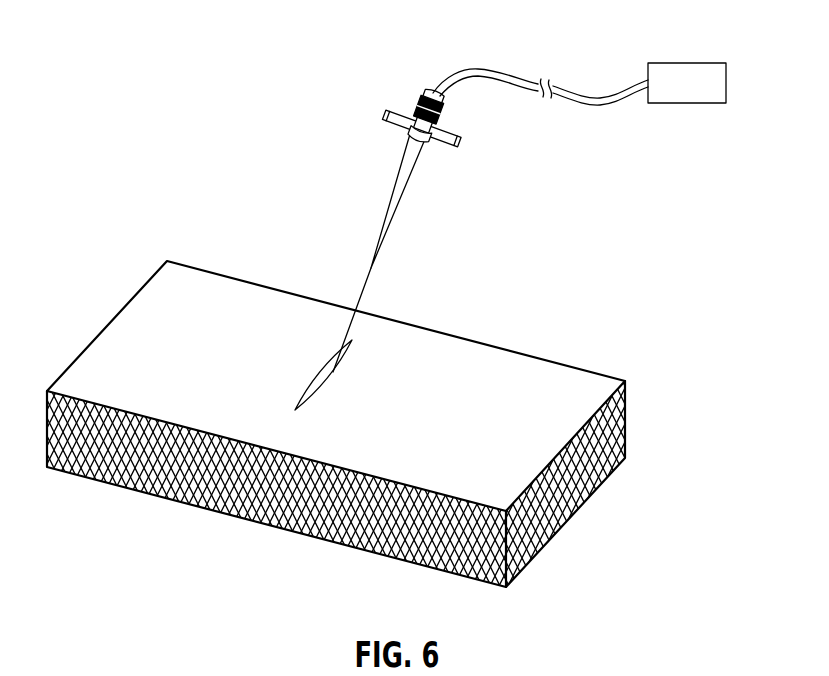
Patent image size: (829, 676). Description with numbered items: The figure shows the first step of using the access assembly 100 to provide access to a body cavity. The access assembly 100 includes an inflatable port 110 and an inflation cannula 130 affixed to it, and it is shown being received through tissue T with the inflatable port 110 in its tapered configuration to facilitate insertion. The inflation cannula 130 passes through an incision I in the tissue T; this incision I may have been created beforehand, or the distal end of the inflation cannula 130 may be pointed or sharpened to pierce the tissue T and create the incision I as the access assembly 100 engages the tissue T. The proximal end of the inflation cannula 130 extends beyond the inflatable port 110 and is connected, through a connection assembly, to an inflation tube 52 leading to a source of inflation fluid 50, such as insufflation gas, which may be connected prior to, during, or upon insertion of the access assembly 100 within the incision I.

The access assembly 100 is at (315, 102).
The inflatable port 110 is at (413, 185).
The inflation cannula 130 is at (410, 110).
The inflation tube 52 is at (523, 86).
The source of inflation fluid 50 is at (687, 63).
The incision I is at (324, 374).
The tissue T is at (552, 393).